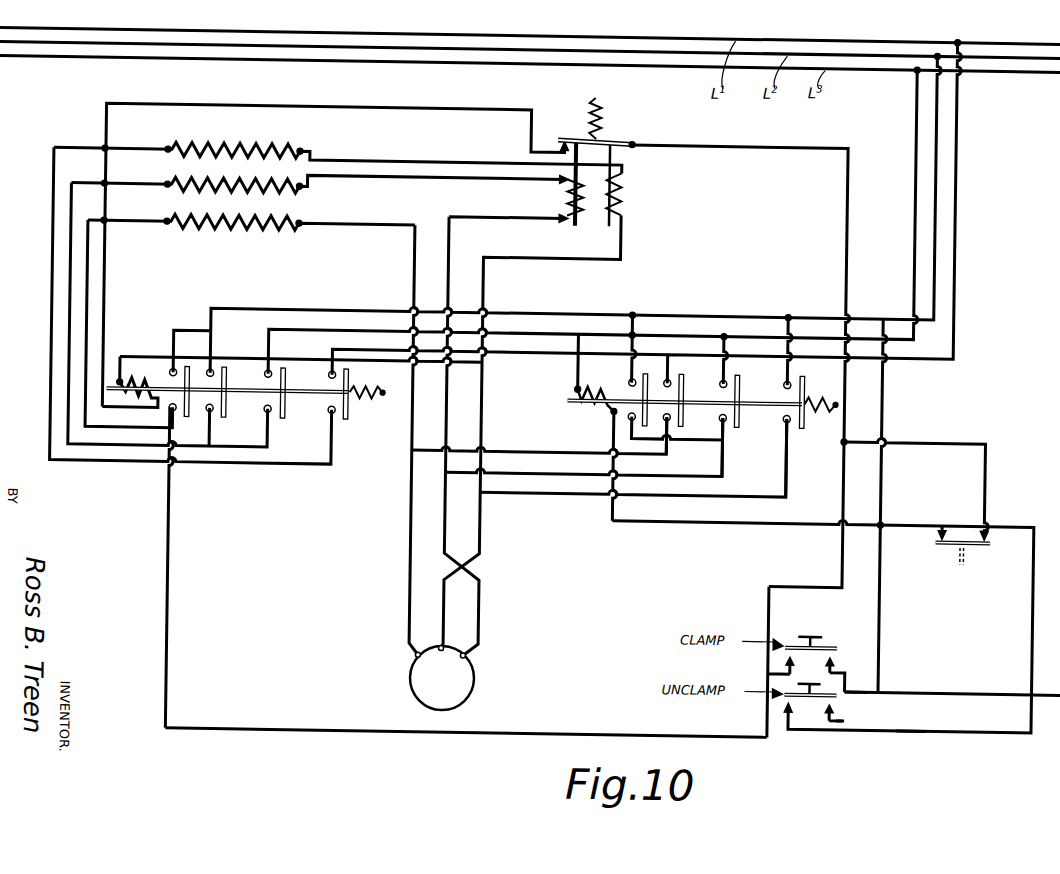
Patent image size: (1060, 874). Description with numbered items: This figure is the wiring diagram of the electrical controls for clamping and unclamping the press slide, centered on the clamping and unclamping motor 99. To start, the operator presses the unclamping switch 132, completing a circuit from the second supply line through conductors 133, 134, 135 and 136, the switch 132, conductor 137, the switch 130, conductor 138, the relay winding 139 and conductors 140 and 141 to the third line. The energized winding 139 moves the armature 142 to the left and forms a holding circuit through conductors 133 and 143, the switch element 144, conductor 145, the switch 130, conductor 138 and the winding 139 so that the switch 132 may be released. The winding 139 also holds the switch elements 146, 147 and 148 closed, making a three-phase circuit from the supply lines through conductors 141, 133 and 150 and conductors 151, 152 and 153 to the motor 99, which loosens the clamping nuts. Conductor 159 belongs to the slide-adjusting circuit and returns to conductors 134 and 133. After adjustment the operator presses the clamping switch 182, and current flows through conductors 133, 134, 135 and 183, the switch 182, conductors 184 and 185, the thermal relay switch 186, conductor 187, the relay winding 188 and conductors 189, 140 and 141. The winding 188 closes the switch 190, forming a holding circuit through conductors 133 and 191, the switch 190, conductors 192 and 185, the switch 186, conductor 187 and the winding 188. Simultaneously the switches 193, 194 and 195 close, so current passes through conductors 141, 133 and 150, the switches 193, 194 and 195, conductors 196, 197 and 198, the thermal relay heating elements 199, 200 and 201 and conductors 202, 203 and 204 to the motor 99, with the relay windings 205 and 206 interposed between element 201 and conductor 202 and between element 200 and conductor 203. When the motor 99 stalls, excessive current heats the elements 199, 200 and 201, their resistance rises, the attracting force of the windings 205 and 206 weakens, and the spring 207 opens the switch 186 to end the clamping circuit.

The clamping and unclamping motor 99 is at (413, 682).
The switch 130 is at (957, 543).
The unclamping switch 132 is at (826, 696).
The conductor 133 is at (932, 180).
The conductor 134 is at (882, 614).
The conductor 135 is at (871, 688).
The conductor 136 is at (848, 715).
The conductor 137 is at (919, 727).
The conductor 138 is at (687, 521).
The relay winding 139 is at (604, 410).
The conductor 140 is at (575, 383).
The conductor 141 is at (912, 214).
The armature 142 is at (566, 400).
The conductor 143 is at (634, 314).
The switch element 144 is at (628, 389).
The conductor 145 is at (908, 440).
The switch element 146 is at (684, 416).
The switch element 147 is at (740, 418).
The switch element 148 is at (806, 423).
The conductor 150 is at (952, 231).
The conductor 151 is at (524, 455).
The conductor 152 is at (563, 478).
The conductor 153 is at (583, 495).
The conductor 159 is at (923, 686).
The clamping switch 182 is at (826, 636).
The conductor 183 is at (840, 660).
The conductor 184 is at (770, 662).
The conductor 185 is at (844, 234).
The thermal relay switch 186 is at (610, 140).
The conductor 187 is at (482, 109).
The relay winding 188 is at (120, 385).
The conductor 189 is at (503, 366).
The switch 190 is at (176, 422).
The conductor 191 is at (190, 336).
The conductor 192 is at (307, 730).
The switch 193 is at (225, 423).
The switch 194 is at (284, 423).
The switch 195 is at (347, 423).
The conductor 196 is at (85, 266).
The conductor 197 is at (50, 306).
The conductor 198 is at (45, 340).
The thermal relay heating element 199 is at (252, 236).
The thermal relay heating element 200 is at (291, 192).
The thermal relay heating element 201 is at (230, 146).
The conductor 202 is at (481, 287).
The conductor 203 is at (446, 241).
The conductor 204 is at (412, 253).
The relay winding 205 is at (614, 190).
The relay winding 206 is at (568, 192).
The spring 207 is at (590, 98).